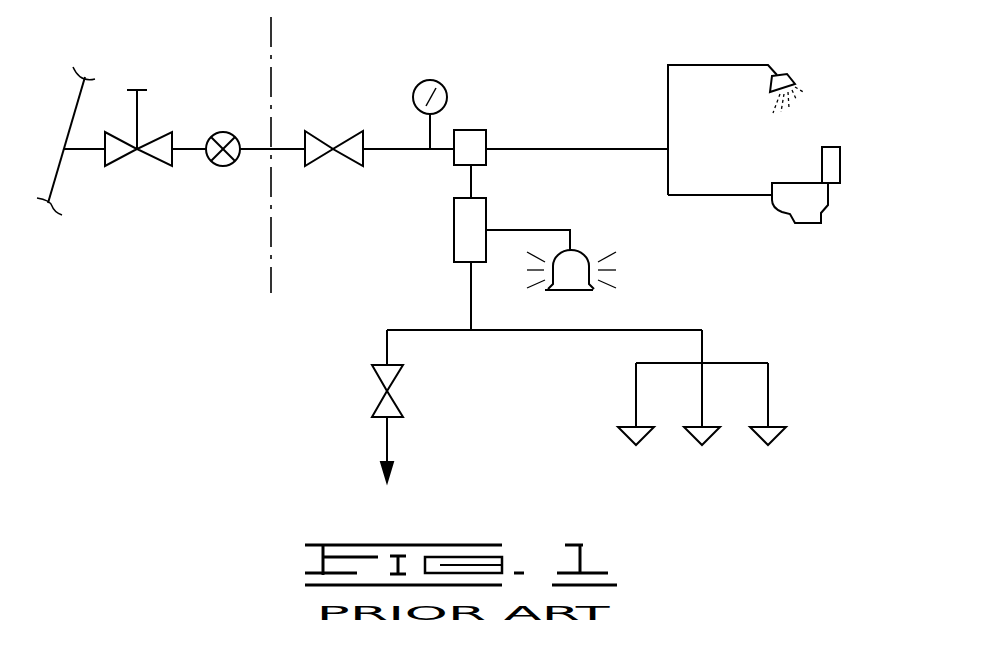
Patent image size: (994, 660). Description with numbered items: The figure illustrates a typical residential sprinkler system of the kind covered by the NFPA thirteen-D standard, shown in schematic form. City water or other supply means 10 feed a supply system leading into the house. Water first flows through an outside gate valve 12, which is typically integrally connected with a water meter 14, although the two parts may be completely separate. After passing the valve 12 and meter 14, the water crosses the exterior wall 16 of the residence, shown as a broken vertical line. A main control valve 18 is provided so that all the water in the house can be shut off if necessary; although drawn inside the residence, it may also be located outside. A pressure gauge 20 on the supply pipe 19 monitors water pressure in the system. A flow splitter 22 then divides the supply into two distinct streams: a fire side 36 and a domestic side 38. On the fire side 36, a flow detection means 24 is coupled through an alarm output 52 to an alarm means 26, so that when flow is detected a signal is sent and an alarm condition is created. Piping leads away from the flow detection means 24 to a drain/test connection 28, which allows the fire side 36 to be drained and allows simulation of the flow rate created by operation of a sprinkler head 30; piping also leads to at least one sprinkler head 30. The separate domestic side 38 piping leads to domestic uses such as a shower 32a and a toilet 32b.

The supply means 10 is at (55, 185).
The outside gate valve 12 is at (153, 168).
The water meter 14 is at (225, 131).
The exterior wall 16 is at (270, 278).
The main control valve 18 is at (350, 133).
The supply pipe 19 is at (405, 150).
The pressure gauge 20 is at (443, 88).
The flow splitter 22 is at (480, 130).
The flow detection means 24 is at (454, 233).
The alarm means 26 is at (582, 250).
The drain/test connection 28 is at (380, 397).
The sprinkler head 30 is at (777, 427).
The domestic use 32a is at (787, 74).
The domestic use 32b is at (784, 182).
The fire side 36 is at (473, 180).
The domestic side 38 is at (570, 148).
The alarm output 52 is at (505, 232).